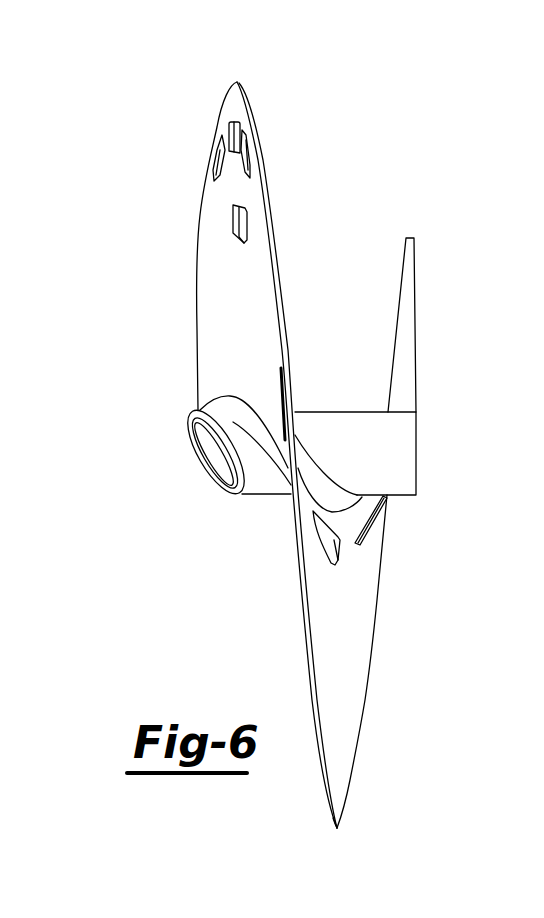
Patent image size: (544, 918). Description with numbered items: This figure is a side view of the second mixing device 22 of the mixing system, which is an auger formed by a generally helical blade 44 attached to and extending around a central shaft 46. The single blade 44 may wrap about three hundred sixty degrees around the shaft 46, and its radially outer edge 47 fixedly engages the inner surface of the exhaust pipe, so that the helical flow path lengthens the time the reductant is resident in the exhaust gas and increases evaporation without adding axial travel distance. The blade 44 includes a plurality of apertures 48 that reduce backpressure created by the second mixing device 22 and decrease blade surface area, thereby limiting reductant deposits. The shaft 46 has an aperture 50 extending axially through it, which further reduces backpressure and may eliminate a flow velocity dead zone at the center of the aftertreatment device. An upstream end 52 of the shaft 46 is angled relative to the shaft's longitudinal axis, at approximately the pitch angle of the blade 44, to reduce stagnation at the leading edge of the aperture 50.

The second mixing device 22 is at (355, 121).
The helical blade 44 is at (235, 103).
The central shaft 46 is at (260, 482).
The radially outer edge 47 is at (336, 830).
The apertures 48 is at (233, 216).
The aperture 50 is at (226, 461).
The upstream end 52 is at (196, 443).